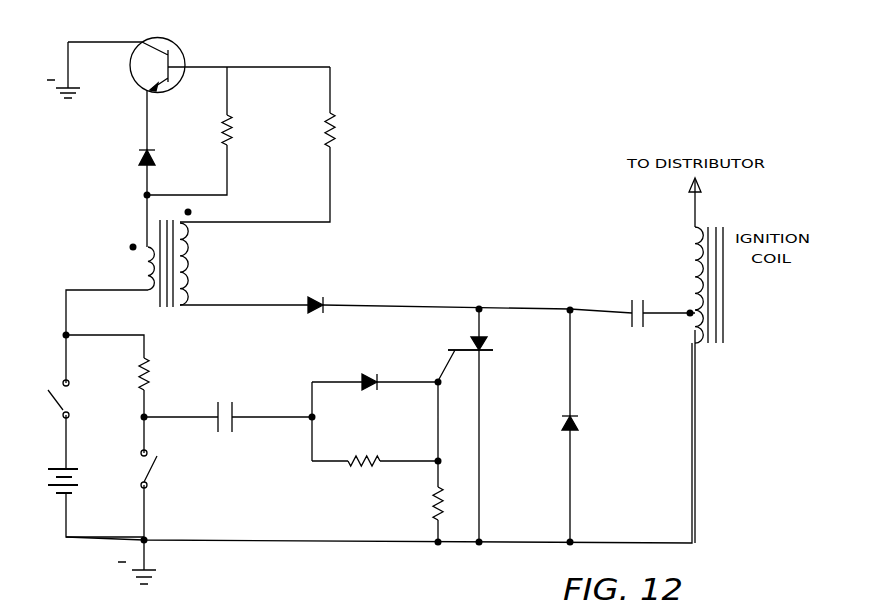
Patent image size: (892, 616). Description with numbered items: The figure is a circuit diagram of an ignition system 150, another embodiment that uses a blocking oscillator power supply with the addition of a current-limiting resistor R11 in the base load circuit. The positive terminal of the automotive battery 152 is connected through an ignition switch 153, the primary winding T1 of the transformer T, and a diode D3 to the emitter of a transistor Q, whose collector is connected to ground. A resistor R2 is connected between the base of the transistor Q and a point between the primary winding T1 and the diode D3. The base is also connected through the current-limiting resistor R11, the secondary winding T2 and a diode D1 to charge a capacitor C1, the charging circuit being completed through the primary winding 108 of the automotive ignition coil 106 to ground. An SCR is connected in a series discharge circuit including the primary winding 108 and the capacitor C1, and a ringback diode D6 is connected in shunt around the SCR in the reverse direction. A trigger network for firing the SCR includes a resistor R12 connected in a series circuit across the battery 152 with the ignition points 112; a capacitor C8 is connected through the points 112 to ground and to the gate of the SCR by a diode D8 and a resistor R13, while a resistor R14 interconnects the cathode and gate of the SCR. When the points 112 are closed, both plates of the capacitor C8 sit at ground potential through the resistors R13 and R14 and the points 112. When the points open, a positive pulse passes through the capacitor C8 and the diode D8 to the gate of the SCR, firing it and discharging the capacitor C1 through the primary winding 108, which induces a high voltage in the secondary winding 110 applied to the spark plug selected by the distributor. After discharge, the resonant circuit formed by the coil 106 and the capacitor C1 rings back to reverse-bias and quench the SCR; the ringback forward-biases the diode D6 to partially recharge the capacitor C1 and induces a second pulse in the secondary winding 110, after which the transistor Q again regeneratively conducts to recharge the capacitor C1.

The ignition system 150 is at (417, 178).
The ignition switch 153 is at (60, 408).
The automotive battery 152 is at (72, 467).
The ignition points 112 is at (152, 470).
The secondary winding 110 is at (695, 234).
The primary winding 108 is at (695, 338).
The automotive ignition coil 106 is at (723, 296).
The transistor Q is at (175, 48).
The resistor R2 is at (232, 125).
The current-limiting resistor R11 is at (335, 125).
The resistor R12 is at (149, 366).
The resistor R13 is at (376, 456).
The resistor R14 is at (435, 490).
The diode D1 is at (318, 300).
The diode D3 is at (138, 158).
The ringback diode D6 is at (578, 424).
The diode D8 is at (383, 356).
The capacitor C1 is at (634, 299).
The capacitor C8 is at (225, 430).
The transformer T is at (160, 305).
The primary winding T1 is at (146, 266).
The secondary winding T2 is at (187, 268).
The element SCR is at (492, 344).